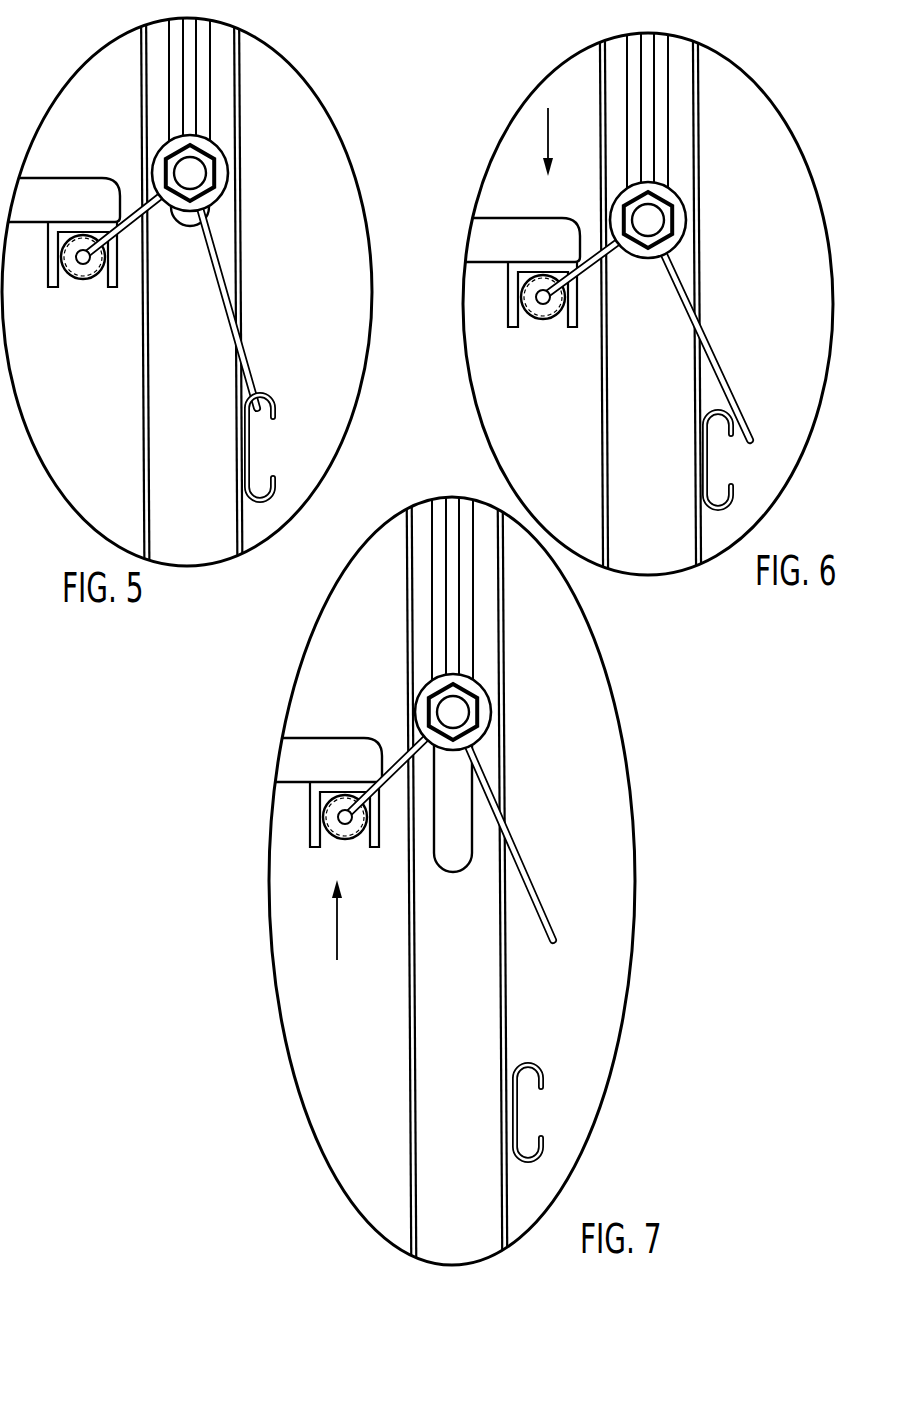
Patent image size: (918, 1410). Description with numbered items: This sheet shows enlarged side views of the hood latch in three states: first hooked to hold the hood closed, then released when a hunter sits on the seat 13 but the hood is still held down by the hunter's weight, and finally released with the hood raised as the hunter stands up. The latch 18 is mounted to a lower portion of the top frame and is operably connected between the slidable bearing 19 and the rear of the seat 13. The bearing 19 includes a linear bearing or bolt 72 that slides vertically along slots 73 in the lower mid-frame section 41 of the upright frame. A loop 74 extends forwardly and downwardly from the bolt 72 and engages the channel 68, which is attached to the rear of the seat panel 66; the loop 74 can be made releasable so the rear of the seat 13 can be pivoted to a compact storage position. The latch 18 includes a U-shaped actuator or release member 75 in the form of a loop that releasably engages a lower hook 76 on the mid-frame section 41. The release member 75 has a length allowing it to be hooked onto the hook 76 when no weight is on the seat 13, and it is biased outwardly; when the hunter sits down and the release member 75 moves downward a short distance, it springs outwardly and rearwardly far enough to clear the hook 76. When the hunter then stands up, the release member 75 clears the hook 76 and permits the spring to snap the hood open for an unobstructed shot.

In FIG. 5, the seat 13 is at (106, 124).
In FIG. 6, the seat 13 is at (574, 162).
In FIG. 7, the seat 13 is at (363, 688).
In FIG. 5, the latch 18 is at (304, 200).
In FIG. 6, the latch 18 is at (766, 243).
In FIG. 5, the slidable bearing 19 is at (203, 143).
In FIG. 6, the slidable bearing 19 is at (663, 186).
In FIG. 7, the slidable bearing 19 is at (470, 687).
In FIG. 5, the mid-frame section 41 is at (244, 292).
In FIG. 6, the mid-frame section 41 is at (704, 304).
In FIG. 7, the mid-frame section 41 is at (511, 881).
In FIG. 5, the seat panel 66 is at (45, 176).
In FIG. 6, the seat panel 66 is at (507, 215).
In FIG. 7, the seat panel 66 is at (307, 737).
In FIG. 5, the channel 68 is at (46, 282).
In FIG. 6, the channel 68 is at (508, 322).
In FIG. 7, the channel 68 is at (307, 842).
In FIG. 5, the bolt 72 is at (214, 167).
In FIG. 6, the bolt 72 is at (678, 210).
In FIG. 7, the bolt 72 is at (484, 707).
In FIG. 5, the slots 73 is at (202, 44).
In FIG. 6, the slots 73 is at (660, 53).
In FIG. 7, the slots 73 is at (438, 532).
In FIG. 5, the loop 74 is at (126, 222).
In FIG. 6, the loop 74 is at (586, 266).
In FIG. 7, the loop 74 is at (388, 790).
In FIG. 5, the release member 75 is at (250, 357).
In FIG. 6, the release member 75 is at (718, 356).
In FIG. 7, the release member 75 is at (524, 863).
In FIG. 5, the lower hook 76 is at (268, 403).
In FIG. 6, the lower hook 76 is at (720, 413).
In FIG. 7, the lower hook 76 is at (527, 1063).